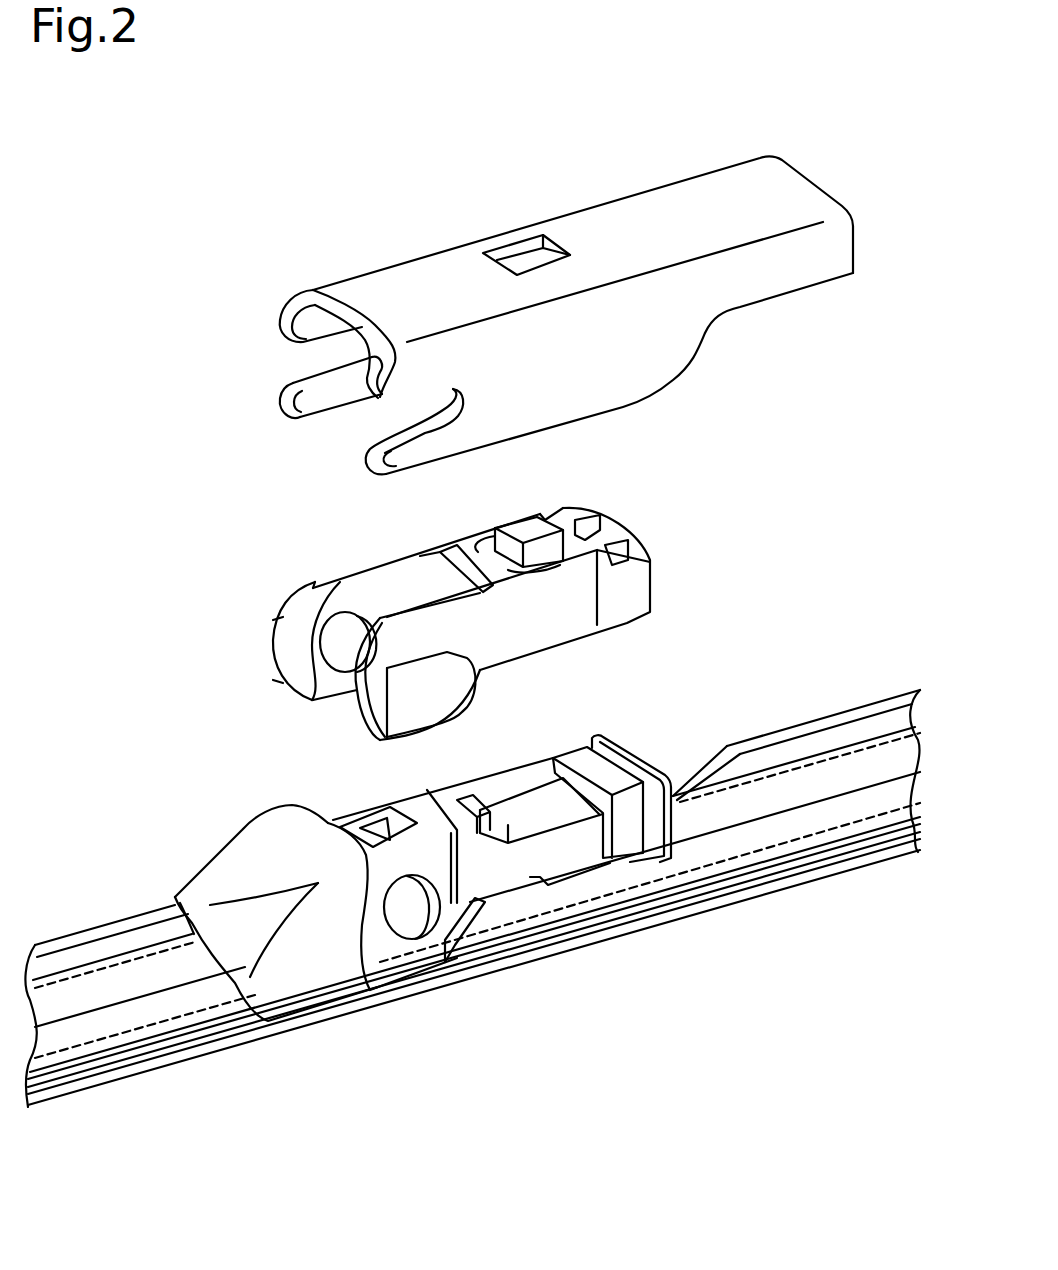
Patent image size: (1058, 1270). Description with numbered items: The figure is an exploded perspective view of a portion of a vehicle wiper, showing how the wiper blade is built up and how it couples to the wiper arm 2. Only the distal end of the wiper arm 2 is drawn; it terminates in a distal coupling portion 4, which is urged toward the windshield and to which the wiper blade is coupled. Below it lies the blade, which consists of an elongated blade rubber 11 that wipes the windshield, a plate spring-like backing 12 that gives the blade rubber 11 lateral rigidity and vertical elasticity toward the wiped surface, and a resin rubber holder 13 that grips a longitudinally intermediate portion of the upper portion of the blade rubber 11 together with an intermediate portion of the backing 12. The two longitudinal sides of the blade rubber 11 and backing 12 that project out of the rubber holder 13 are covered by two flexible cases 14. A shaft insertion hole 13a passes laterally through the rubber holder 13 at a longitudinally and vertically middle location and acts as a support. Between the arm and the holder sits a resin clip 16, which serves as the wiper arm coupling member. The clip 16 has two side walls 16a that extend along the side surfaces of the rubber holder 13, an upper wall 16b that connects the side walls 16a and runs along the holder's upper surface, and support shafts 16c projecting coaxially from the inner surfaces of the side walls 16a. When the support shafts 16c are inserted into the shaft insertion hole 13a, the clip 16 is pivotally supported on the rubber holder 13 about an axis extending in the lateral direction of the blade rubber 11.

The wiper arm 2 is at (808, 184).
The distal coupling portion 4 is at (414, 273).
The blade rubber 11 is at (147, 1071).
The backing 12 is at (120, 960).
The rubber holder 13 is at (355, 807).
The shaft insertion hole 13a is at (411, 930).
The flexible case 14 is at (824, 773).
The clip 16 is at (552, 636).
The side wall 16a is at (310, 691).
The upper wall 16b is at (470, 548).
The support shaft 16c is at (353, 633).